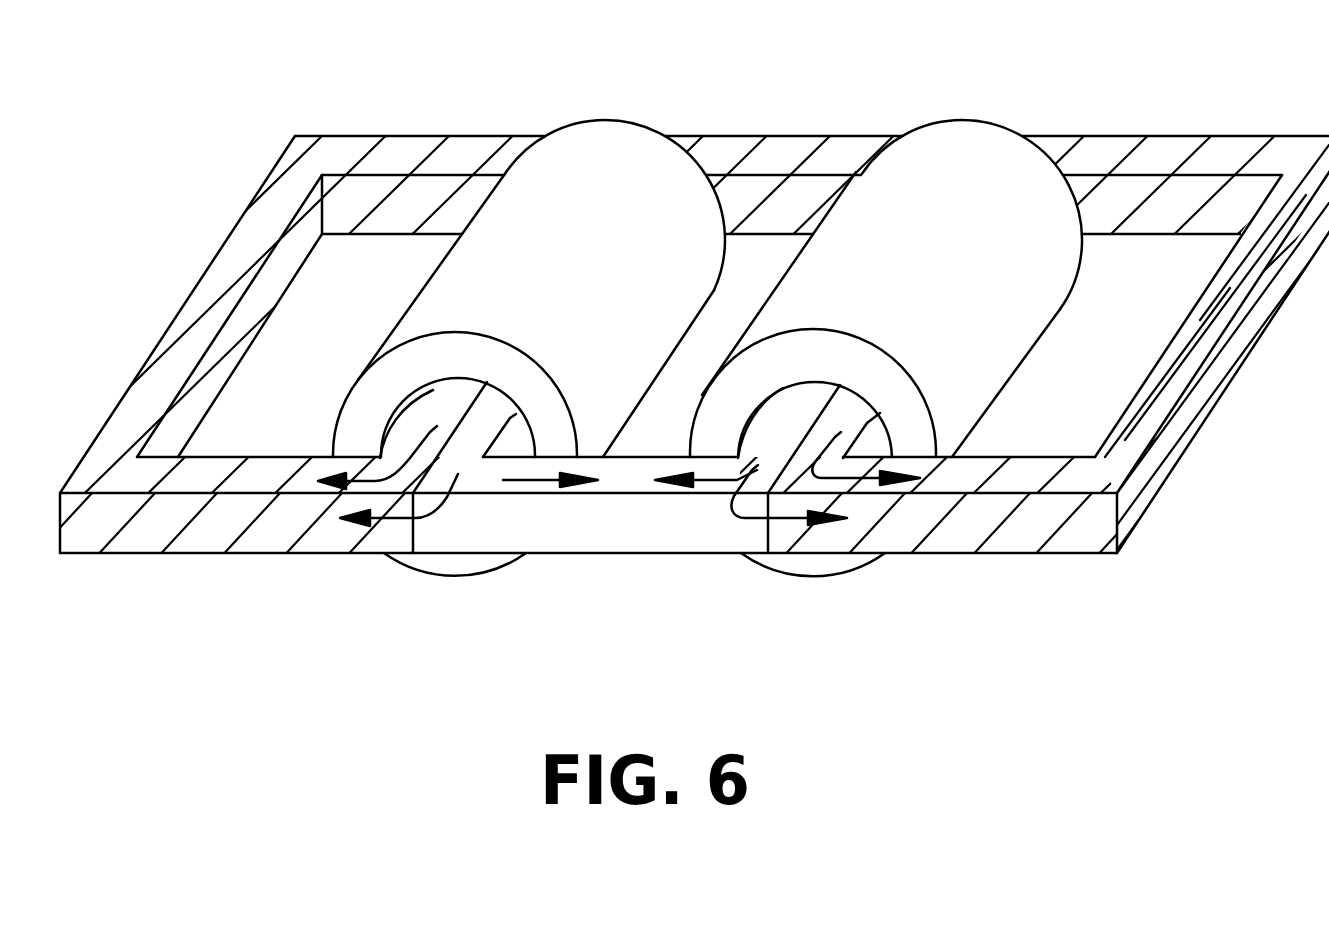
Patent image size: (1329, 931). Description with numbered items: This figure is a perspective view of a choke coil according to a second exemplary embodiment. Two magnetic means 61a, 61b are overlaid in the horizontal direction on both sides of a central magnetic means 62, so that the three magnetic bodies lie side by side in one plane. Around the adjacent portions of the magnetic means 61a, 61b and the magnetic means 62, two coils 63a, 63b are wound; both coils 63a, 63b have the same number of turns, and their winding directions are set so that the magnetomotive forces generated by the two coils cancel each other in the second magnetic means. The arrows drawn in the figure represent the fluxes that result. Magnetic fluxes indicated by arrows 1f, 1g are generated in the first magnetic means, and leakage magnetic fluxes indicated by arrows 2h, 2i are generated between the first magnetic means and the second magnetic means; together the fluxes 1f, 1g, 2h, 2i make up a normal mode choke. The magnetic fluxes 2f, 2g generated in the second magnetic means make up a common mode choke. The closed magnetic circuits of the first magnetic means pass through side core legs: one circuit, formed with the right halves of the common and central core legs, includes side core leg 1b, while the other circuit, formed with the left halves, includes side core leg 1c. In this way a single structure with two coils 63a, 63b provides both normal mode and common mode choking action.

The magnetic means 61a is at (406, 152).
The magnetic means 61b is at (1213, 143).
The magnetic means 62 is at (793, 157).
The coil 63a is at (603, 138).
The coil 63b is at (977, 135).
The arrow (magnetic flux) 1g is at (357, 481).
The arrow (leakage magnetic flux) 2i is at (385, 522).
The side core leg 1c is at (447, 398).
The magnetic flux 2g is at (540, 480).
The magnetic flux 2f is at (703, 483).
The arrow (leakage magnetic flux) 2h is at (742, 545).
The arrow (magnetic flux) 1f is at (847, 413).
The side core leg 1b is at (850, 415).